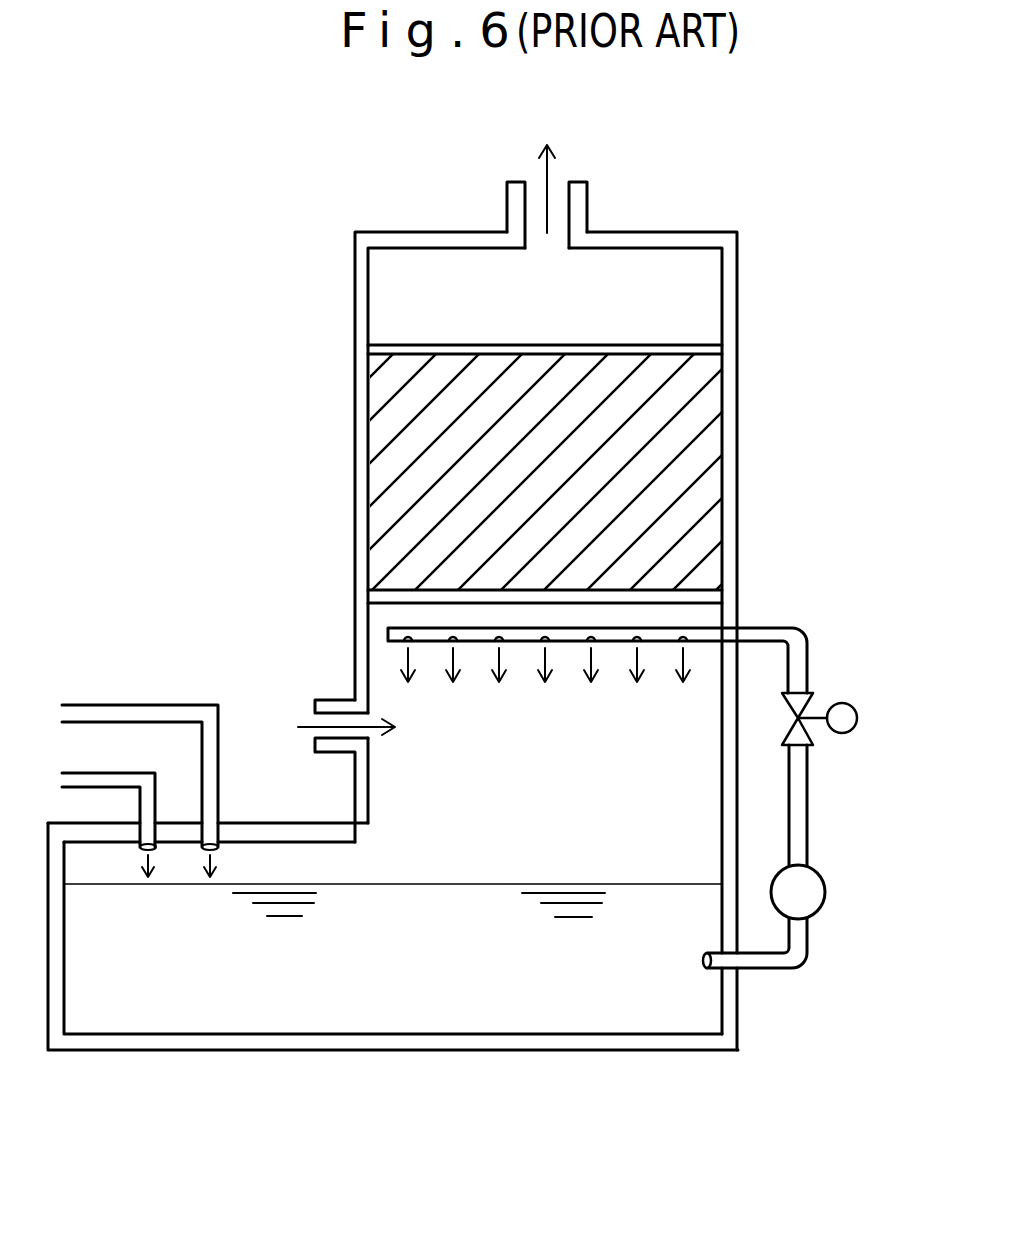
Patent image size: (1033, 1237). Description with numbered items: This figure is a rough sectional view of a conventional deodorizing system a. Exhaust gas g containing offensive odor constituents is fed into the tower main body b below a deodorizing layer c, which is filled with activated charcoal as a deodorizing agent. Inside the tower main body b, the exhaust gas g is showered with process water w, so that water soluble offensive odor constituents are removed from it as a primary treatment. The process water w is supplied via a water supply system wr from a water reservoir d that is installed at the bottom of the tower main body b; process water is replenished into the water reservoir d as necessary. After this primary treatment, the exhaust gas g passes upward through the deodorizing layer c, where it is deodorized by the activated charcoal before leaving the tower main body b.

The deodorizing system a is at (415, 220).
The tower main body b is at (730, 308).
The deodorizing layer c is at (702, 455).
The exhaust gas g is at (333, 728).
The water reservoir d is at (368, 1000).
The process water w is at (485, 1005).
The water supply system wr is at (798, 807).